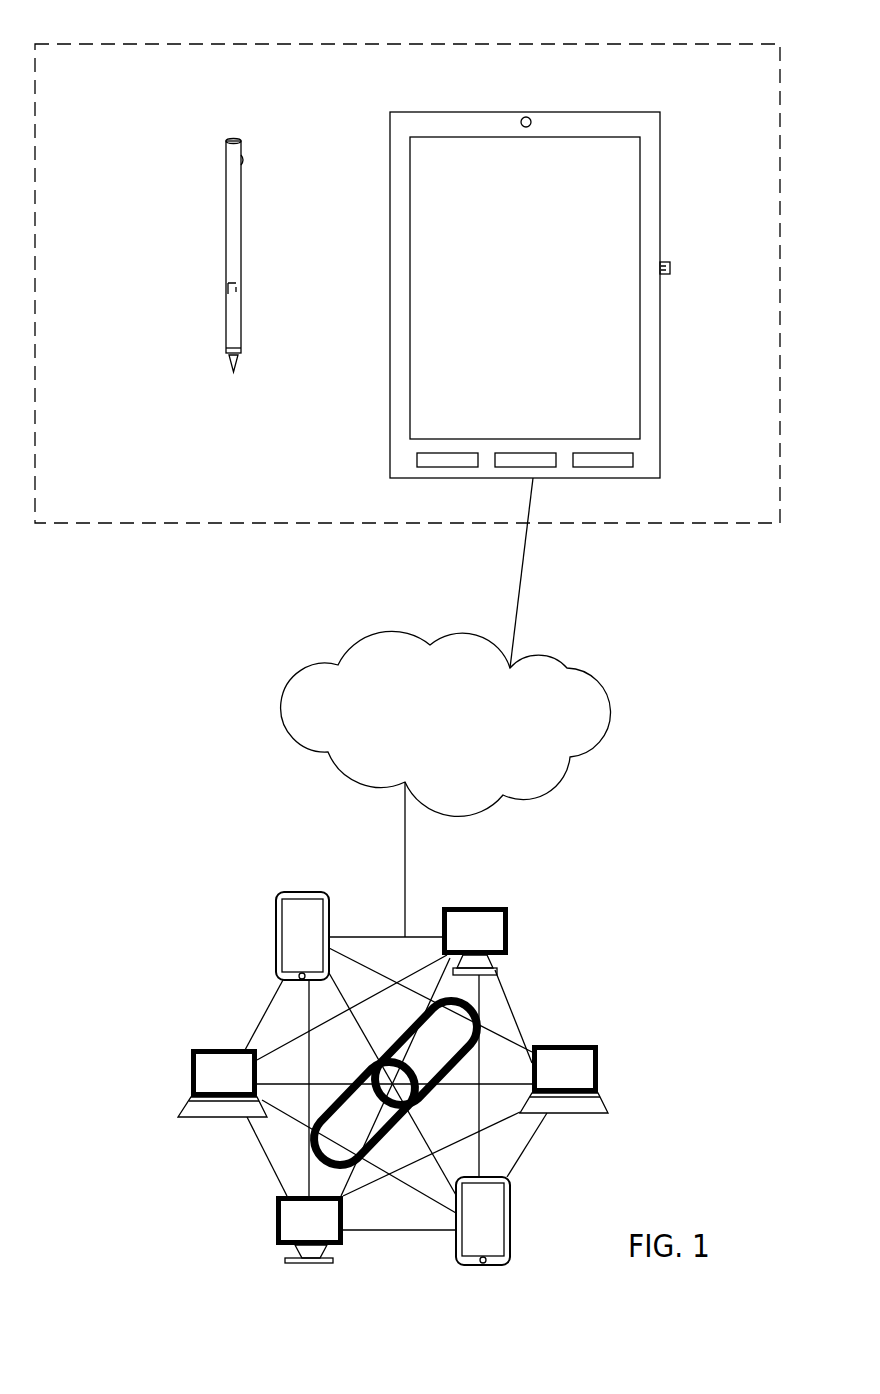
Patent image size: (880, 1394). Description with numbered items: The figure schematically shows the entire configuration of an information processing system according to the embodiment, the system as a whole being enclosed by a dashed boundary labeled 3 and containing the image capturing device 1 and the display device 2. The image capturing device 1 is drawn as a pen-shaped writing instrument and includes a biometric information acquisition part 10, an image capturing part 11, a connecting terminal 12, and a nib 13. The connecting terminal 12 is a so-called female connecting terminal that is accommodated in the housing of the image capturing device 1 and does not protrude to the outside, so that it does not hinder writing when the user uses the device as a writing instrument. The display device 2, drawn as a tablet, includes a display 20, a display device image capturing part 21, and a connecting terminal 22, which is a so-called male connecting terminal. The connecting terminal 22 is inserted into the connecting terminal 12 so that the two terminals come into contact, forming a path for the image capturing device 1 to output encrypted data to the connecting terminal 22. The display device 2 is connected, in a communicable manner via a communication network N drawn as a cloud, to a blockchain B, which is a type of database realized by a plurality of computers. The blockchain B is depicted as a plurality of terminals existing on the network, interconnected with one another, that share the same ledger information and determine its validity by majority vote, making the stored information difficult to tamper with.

The image capturing device 1 is at (233, 140).
The biometric information acquisition part 10 is at (226, 190).
The image capturing part 11 is at (241, 160).
The connecting terminal 12 is at (228, 284).
The nib 13 is at (238, 362).
The display device 2 is at (633, 112).
The display 20 is at (577, 137).
The display device image capturing part 21 is at (529, 117).
The connecting terminal 22 is at (668, 264).
The system 3 is at (757, 44).
The communication network N is at (567, 668).
The blockchain B is at (558, 955).